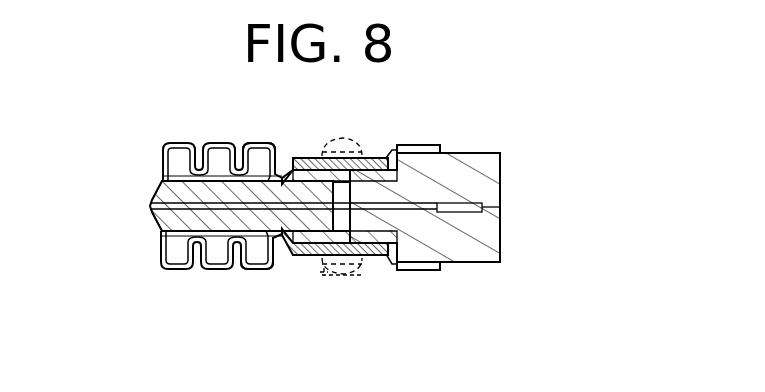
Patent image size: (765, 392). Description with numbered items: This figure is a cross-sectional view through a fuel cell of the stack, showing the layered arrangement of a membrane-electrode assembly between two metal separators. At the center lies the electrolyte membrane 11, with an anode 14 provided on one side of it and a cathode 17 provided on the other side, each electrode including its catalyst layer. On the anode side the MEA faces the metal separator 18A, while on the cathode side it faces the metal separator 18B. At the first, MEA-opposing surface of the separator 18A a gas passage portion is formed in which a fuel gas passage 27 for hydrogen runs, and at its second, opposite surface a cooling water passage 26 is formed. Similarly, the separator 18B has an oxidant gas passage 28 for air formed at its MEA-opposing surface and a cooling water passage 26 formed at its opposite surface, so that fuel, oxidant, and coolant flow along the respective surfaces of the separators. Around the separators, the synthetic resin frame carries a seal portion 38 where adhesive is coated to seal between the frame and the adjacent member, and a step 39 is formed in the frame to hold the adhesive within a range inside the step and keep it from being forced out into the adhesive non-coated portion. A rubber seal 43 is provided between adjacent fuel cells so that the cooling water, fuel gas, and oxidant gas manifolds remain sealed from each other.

The electrolyte membrane 11 is at (152, 204).
The anode 14 is at (160, 229).
The cathode 17 is at (157, 200).
The separator 18A is at (368, 157).
The separator 18B is at (300, 255).
The coolant passage 26 is at (233, 148).
The fuel gas passage 27 is at (248, 272).
The oxidant gas passage 28 is at (248, 143).
The seal portion 38 is at (307, 157).
The step 39 is at (383, 155).
The rubber seal 43 is at (327, 283).